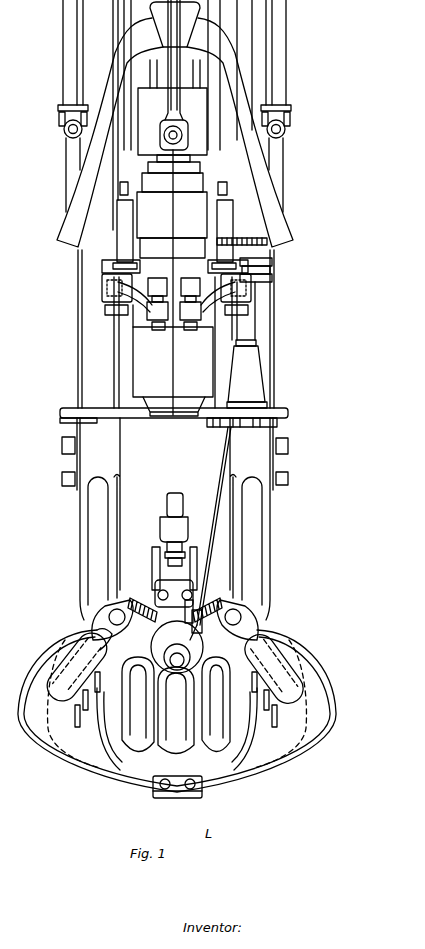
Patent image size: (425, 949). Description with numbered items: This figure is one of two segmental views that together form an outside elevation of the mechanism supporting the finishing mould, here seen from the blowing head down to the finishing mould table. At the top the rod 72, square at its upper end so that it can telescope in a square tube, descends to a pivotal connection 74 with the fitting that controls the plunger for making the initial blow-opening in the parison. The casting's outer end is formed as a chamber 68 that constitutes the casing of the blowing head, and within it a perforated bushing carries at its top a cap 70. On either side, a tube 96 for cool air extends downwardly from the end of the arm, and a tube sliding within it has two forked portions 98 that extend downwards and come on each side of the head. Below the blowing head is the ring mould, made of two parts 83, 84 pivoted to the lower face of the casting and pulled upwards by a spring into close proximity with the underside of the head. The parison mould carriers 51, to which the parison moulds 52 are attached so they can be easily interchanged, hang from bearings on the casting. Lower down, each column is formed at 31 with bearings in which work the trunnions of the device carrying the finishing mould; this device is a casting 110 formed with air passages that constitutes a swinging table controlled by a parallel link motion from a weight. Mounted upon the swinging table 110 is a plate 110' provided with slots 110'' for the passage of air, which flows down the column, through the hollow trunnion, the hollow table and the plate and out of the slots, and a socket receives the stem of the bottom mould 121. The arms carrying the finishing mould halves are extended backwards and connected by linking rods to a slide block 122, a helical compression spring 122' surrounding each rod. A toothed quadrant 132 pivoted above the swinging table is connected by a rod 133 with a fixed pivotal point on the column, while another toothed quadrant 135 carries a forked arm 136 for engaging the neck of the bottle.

The rod 72 is at (172, 80).
The pivotal connection 74 is at (183, 137).
The forked portions 98 is at (95, 148).
The tube for cool air 96 is at (260, 178).
The cap 70 is at (158, 176).
The chamber 68 is at (150, 220).
The ring mould part 84 is at (140, 255).
The ring mould part 83 is at (193, 247).
The parison mould carrier 51 is at (147, 317).
The parison mould 52 is at (173, 371).
The bearings 31 is at (287, 453).
The casting 110 is at (151, 519).
The rod 133 is at (212, 520).
The slide block 122 is at (227, 550).
The helical compression spring 122' is at (172, 608).
The toothed quadrant 135 is at (225, 630).
The toothed quadrant 132 is at (205, 644).
The forked arm 136 is at (85, 628).
The plate 110' is at (179, 677).
The slots 110'' is at (169, 726).
The bottom mould 121 is at (125, 778).